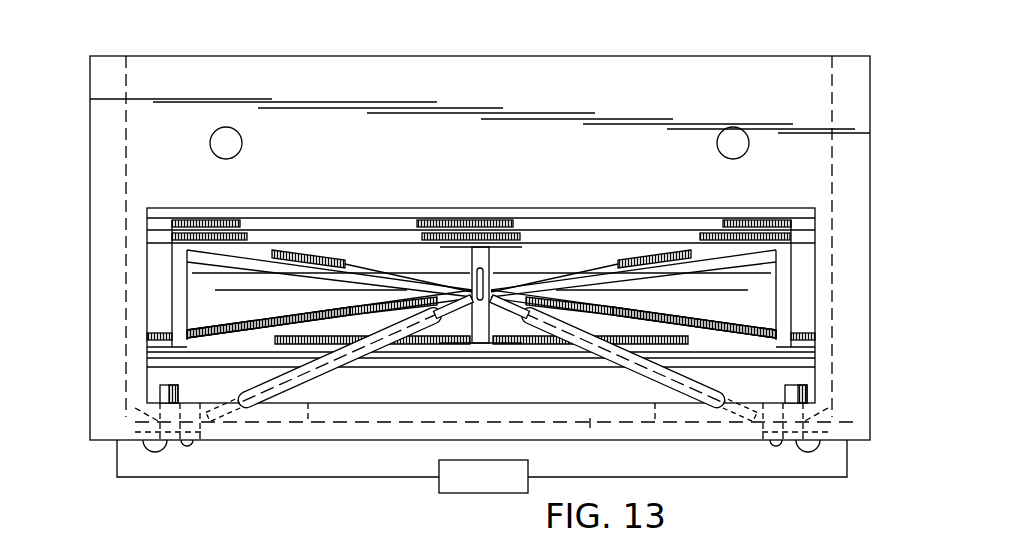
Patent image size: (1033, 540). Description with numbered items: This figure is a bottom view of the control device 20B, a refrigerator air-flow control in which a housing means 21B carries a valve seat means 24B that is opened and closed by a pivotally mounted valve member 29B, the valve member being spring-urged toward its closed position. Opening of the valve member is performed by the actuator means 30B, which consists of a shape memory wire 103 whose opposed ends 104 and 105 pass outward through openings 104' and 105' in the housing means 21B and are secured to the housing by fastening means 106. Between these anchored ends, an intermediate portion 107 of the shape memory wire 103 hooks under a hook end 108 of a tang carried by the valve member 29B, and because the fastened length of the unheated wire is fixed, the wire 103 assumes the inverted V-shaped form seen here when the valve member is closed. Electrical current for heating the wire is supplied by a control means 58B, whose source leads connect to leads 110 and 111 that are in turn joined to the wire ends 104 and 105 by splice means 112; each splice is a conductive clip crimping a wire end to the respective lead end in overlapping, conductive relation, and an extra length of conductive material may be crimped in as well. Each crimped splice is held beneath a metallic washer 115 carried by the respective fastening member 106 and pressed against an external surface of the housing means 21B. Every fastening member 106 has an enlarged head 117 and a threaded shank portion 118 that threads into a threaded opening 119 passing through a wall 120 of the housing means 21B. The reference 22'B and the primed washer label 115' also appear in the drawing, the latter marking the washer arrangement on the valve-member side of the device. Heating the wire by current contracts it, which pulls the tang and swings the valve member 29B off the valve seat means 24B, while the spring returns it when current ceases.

The control device 20B is at (660, 38).
The housing means 21B is at (90, 75).
The guide rail 22'B is at (250, 295).
The valve seat means 24B is at (300, 210).
The valve member 29B is at (528, 237).
The actuator means 30B is at (595, 328).
The control means 58B is at (472, 485).
The shape memory wire 103 is at (592, 367).
The end of shape memory wire 104 is at (340, 380).
The opening in housing means 104' is at (330, 436).
The end of shape memory wire 105 is at (632, 380).
The opening in housing means 105' is at (655, 436).
The fastening means 106 is at (160, 455).
The intermediate portion of shape memory wire 107 is at (458, 345).
The hook end of tang means 108 is at (455, 257).
The lead 110 is at (110, 453).
The lead 111 is at (855, 453).
The splice means 112 is at (147, 430).
The metallic washer 115 is at (476, 483).
The link 115' is at (481, 331).
The enlarged head 117 is at (193, 443).
The threaded shank portion 118 is at (160, 392).
The threaded opening 119 is at (160, 408).
The wall of housing means 120 is at (593, 427).